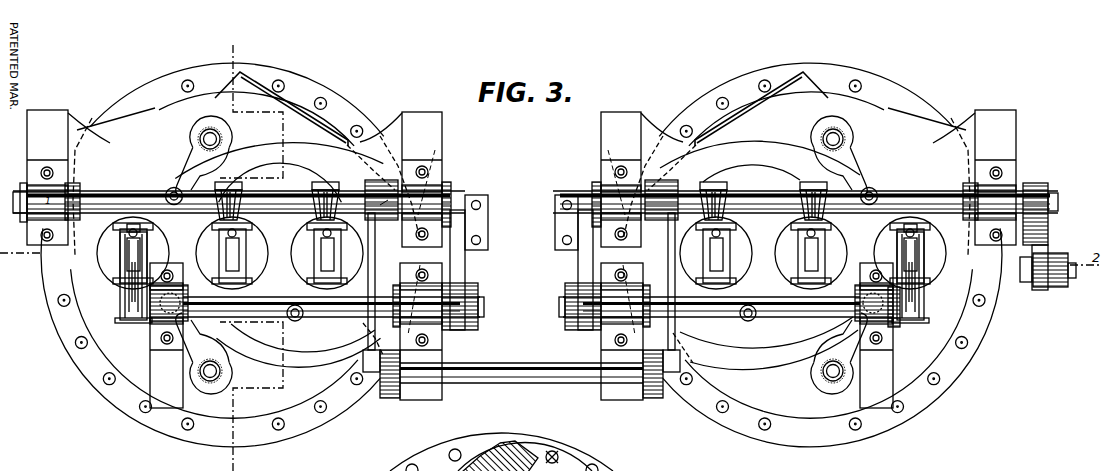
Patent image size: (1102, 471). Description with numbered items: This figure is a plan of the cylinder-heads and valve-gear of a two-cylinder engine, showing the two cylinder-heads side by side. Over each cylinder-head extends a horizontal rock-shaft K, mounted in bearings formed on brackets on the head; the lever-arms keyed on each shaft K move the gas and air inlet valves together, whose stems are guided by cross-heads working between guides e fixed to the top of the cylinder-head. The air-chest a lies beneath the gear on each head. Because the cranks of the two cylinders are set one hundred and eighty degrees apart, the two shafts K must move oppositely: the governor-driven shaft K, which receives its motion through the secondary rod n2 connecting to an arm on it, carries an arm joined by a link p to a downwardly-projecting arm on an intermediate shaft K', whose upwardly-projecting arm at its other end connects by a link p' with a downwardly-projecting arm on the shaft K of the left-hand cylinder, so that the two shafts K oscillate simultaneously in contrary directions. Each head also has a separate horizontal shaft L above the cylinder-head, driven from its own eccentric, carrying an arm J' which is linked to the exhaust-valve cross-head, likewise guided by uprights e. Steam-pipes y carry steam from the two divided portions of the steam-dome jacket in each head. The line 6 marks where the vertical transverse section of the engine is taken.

The rock-shaft K is at (535, 203).
The intermediate shaft K' is at (521, 361).
The horizontal shaft L is at (541, 315).
The guides e is at (340, 273).
The arm J' is at (512, 252).
The steam-pipes y is at (200, 130).
The link p is at (682, 343).
The link p' is at (358, 339).
The air-chest a is at (398, 198).
The secondary rod n2 is at (1045, 284).
The section line 6 is at (545, 470).